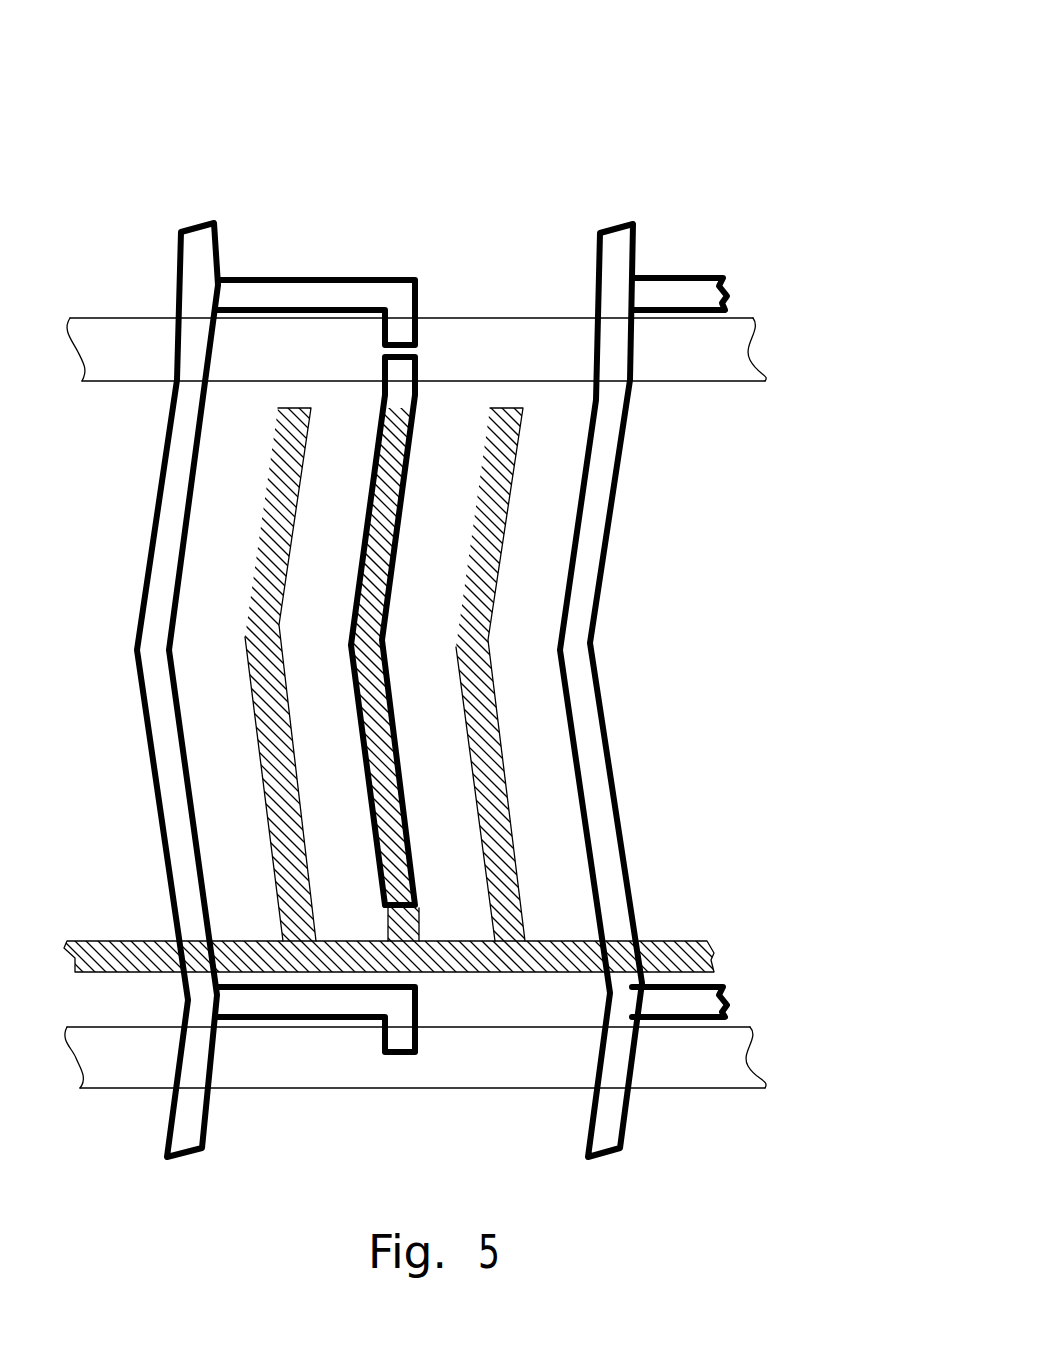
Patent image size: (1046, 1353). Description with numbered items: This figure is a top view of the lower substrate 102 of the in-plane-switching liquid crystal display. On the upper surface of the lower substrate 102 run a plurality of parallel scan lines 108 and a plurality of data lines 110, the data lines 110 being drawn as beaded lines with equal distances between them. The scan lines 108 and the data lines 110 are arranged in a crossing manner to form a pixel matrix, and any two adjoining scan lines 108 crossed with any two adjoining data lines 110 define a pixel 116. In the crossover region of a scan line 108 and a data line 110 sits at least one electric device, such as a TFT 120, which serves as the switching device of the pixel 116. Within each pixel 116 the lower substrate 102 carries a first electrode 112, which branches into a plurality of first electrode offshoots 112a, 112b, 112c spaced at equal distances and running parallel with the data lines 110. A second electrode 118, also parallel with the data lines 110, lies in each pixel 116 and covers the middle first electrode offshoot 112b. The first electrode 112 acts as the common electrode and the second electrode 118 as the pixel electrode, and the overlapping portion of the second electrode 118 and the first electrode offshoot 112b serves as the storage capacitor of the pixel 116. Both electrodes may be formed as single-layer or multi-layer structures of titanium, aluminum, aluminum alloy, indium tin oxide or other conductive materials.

The lower substrate 102 is at (657, 78).
The scan lines 108 is at (728, 345).
The data lines 110 is at (177, 477).
The first electrodes 112 is at (523, 687).
The first electrode offshoot 112a is at (263, 540).
The first electrode offshoot 112b is at (400, 937).
The first electrode offshoot 112c is at (505, 797).
The pixel 116 is at (238, 433).
The second electrode 118 is at (356, 603).
The TFT 120 is at (439, 336).